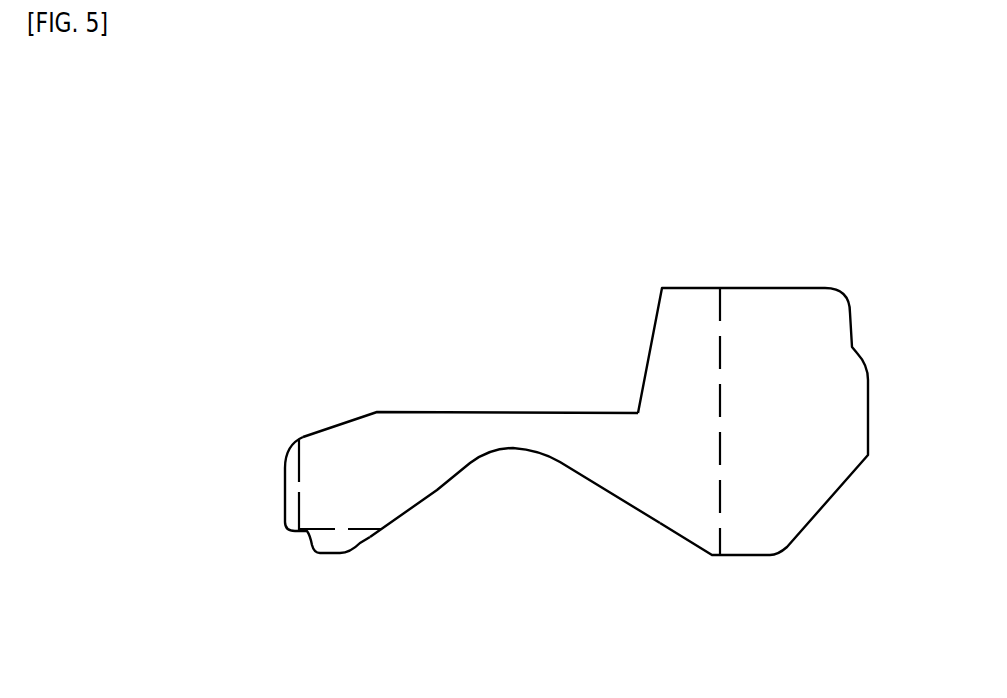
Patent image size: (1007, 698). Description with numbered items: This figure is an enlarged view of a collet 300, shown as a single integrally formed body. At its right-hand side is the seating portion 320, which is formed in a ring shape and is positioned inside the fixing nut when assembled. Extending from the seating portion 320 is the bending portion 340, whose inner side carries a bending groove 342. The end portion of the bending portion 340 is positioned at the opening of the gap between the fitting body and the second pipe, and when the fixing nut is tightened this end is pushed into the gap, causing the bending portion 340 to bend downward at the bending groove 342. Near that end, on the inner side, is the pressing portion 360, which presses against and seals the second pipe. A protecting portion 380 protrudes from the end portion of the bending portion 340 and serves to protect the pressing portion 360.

The collet 300 is at (220, 193).
The seating portion 320 is at (808, 308).
The bending portion 340 is at (555, 427).
The bending groove 342 is at (518, 448).
The pressing portion 360 is at (335, 540).
The protecting portion 380 is at (295, 485).